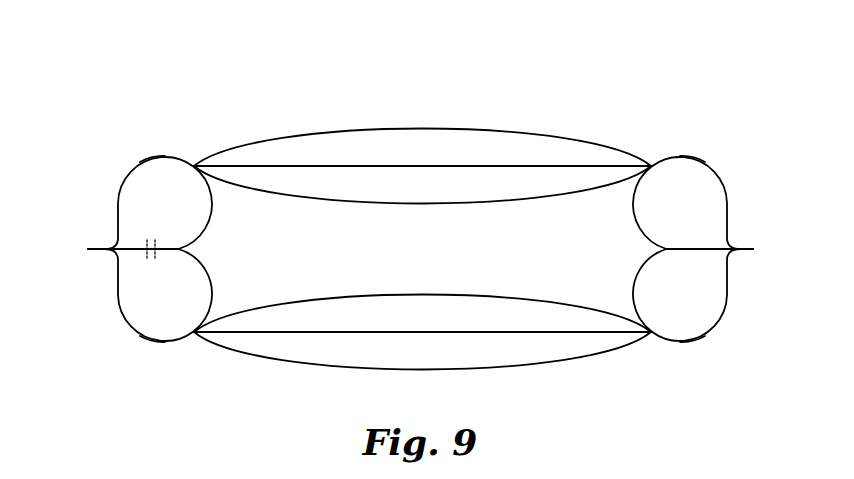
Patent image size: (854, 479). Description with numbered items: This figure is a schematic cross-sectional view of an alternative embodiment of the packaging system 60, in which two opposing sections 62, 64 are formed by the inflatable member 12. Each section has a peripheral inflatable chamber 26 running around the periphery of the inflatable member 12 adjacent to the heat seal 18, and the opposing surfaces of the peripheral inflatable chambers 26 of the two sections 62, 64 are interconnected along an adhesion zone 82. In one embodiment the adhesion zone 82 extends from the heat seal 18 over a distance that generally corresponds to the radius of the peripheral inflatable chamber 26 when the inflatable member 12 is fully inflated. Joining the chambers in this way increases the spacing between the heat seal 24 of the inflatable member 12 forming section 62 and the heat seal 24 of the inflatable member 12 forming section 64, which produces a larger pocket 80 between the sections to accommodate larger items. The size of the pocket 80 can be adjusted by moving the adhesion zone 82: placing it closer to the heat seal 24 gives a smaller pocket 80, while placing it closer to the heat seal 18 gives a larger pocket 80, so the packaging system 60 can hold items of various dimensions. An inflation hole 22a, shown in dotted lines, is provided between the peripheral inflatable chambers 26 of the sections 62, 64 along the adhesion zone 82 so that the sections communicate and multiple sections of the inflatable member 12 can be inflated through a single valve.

The inflatable member 12 is at (122, 180).
The heat seal 18 is at (92, 249).
The inflation hole 22a is at (150, 258).
The heat seal 24 is at (194, 166).
The peripheral inflatable chamber 26 is at (145, 160).
The packaging system 60 is at (588, 106).
The section 62 is at (423, 137).
The section 64 is at (428, 372).
The pocket 80 is at (407, 284).
The adhesion zone 82 is at (137, 252).